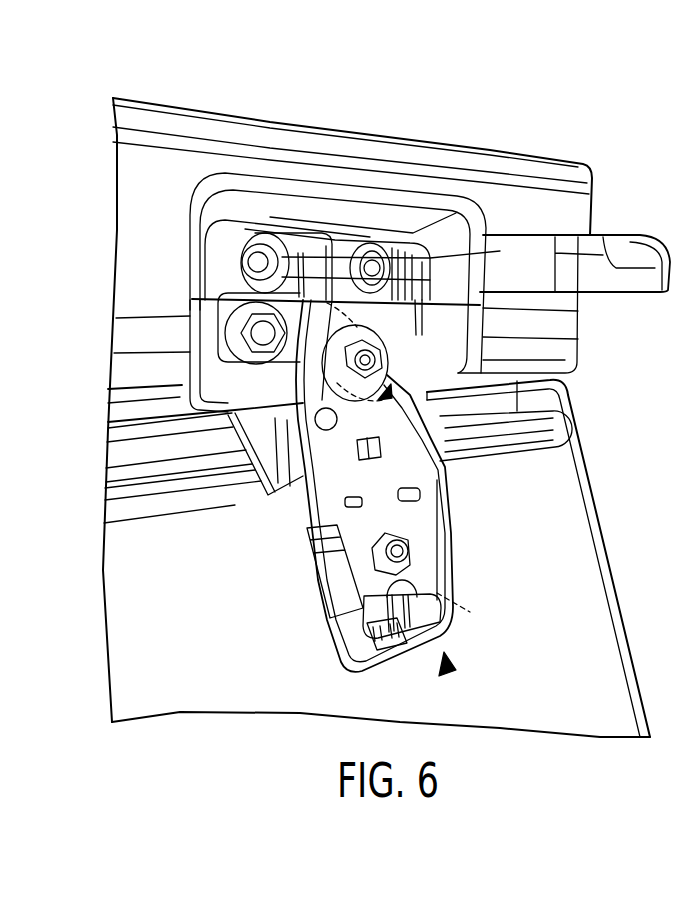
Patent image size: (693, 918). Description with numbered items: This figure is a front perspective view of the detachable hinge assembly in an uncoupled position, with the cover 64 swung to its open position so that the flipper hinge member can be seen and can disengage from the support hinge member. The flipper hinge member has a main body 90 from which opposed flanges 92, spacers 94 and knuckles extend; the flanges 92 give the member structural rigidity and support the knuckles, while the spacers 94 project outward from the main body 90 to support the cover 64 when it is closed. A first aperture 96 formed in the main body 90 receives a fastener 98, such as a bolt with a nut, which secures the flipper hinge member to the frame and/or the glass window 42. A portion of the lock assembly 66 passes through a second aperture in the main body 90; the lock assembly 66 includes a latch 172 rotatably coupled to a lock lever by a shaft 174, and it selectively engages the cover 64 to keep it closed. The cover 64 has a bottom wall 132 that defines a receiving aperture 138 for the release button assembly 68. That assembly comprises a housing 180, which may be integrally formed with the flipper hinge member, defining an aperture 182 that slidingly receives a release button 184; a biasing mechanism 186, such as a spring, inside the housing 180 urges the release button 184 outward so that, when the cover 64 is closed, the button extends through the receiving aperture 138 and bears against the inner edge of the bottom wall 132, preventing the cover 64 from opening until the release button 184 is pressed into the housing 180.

The glass window 42 is at (597, 648).
The cover 64 is at (511, 246).
The lock assembly 66 is at (420, 385).
The release button assembly 68 is at (452, 673).
The main body 90 is at (415, 468).
The opposed flanges 92 is at (312, 497).
The spacers 94 is at (275, 470).
The first aperture 96 is at (372, 577).
The fastener 98 is at (413, 552).
The bottom wall 132 is at (637, 281).
The receiving aperture 138 is at (626, 255).
The latch 172 is at (343, 335).
The shaft 174 is at (362, 358).
The housing 180 is at (440, 627).
The aperture 182 is at (395, 595).
The release button 184 is at (411, 637).
The biasing mechanism 186 is at (470, 612).